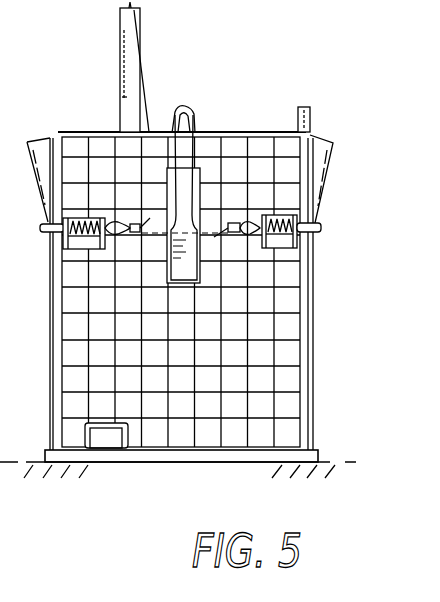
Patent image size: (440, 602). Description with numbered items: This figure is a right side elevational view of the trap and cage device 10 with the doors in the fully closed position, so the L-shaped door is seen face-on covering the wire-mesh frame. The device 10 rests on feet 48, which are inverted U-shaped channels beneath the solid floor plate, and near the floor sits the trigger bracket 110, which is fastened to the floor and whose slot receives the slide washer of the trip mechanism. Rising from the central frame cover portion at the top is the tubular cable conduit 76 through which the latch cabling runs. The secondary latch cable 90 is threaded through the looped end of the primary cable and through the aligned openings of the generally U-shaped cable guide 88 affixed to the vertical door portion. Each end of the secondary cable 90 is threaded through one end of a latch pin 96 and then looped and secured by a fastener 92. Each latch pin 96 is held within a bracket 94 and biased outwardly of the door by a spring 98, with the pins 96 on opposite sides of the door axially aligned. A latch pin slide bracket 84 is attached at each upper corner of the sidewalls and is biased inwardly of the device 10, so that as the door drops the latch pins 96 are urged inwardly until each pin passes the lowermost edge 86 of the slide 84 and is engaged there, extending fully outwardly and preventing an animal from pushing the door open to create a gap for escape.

The trap and cage device 10 is at (238, 102).
The feet 48 is at (320, 460).
The tubular cable conduit 76 is at (118, 63).
The latch pin slide bracket 84 is at (43, 136).
The lowermost edge of the slide 86 is at (40, 228).
The cable guide 88 is at (185, 278).
The secondary latch cable 90 is at (197, 117).
The fastener 92 is at (233, 222).
The bracket 94 is at (283, 245).
The latch pin 96 is at (314, 231).
The spring 98 is at (275, 216).
The trigger bracket 110 is at (133, 430).